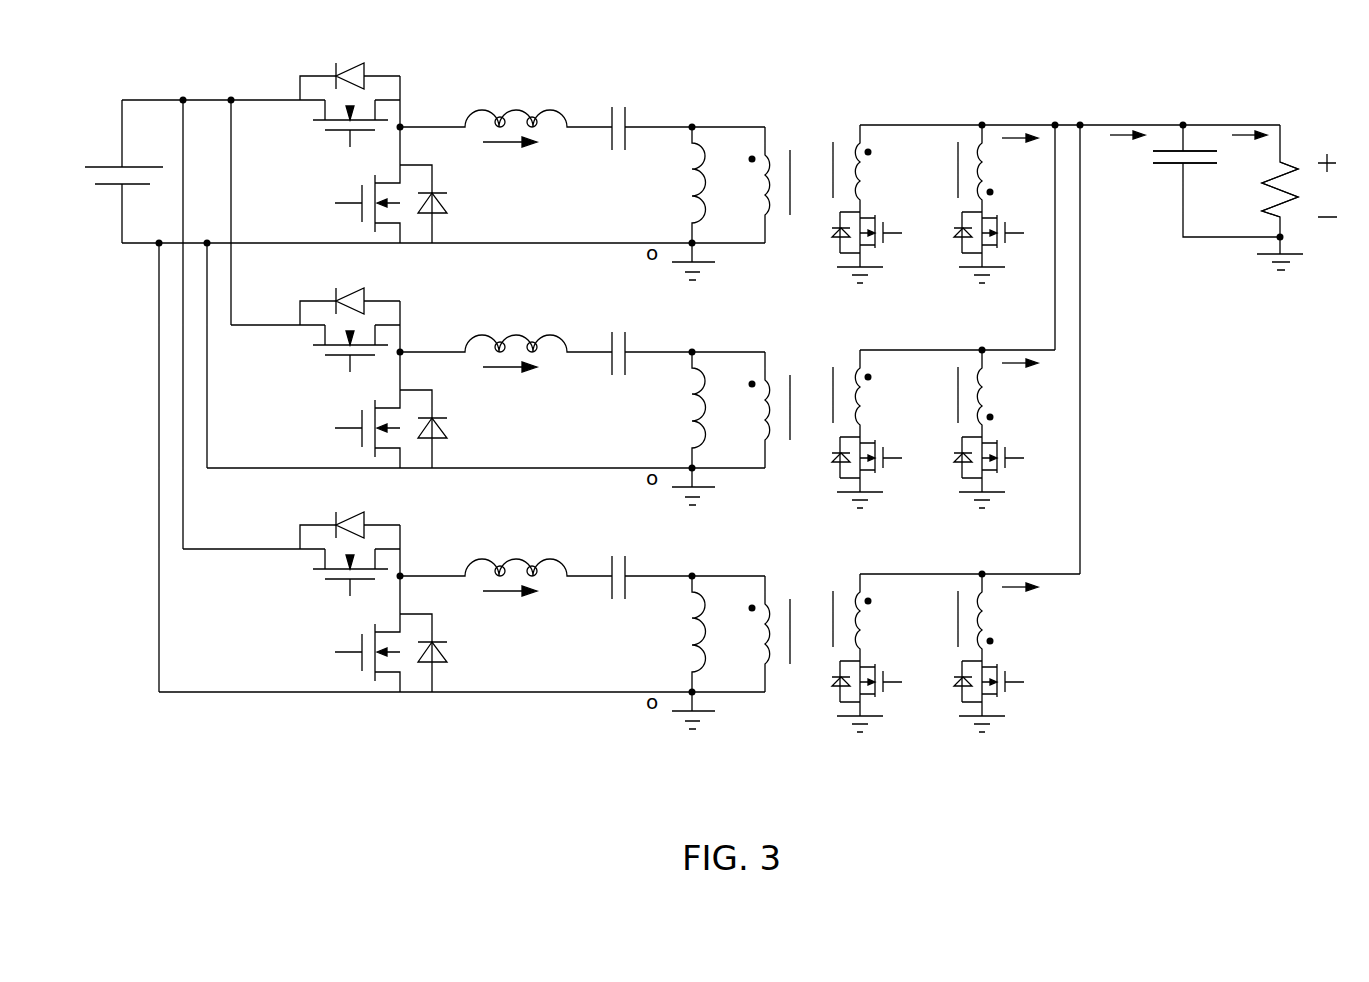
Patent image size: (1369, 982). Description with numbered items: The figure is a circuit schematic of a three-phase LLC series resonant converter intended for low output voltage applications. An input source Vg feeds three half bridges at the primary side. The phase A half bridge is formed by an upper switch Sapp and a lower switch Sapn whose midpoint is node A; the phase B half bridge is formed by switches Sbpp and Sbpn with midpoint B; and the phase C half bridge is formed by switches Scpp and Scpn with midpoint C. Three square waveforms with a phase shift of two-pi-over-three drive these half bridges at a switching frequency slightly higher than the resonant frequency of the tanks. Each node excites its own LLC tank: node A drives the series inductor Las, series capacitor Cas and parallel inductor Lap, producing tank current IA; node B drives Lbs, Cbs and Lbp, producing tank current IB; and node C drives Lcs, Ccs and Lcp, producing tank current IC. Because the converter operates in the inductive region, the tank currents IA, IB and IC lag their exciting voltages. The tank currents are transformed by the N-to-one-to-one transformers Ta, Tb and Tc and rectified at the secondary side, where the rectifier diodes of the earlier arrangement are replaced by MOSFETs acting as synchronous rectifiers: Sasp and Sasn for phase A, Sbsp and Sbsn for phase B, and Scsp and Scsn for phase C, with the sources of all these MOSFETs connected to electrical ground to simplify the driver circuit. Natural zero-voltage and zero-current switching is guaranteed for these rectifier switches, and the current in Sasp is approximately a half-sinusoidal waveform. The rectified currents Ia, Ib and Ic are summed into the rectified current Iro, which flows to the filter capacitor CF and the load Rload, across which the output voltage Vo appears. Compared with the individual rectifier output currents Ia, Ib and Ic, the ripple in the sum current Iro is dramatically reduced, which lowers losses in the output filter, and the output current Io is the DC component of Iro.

The input voltage source Vg is at (121, 171).
The phase A primary upper switch Sapp is at (336, 112).
The phase A primary lower switch Sapn is at (368, 185).
The phase A switching node A is at (412, 140).
The phase A series resonant inductor Las is at (506, 101).
The phase A series resonant capacitor Cas is at (685, 112).
The phase A parallel inductor Lap is at (671, 185).
The phase A resonant tank current IA is at (510, 160).
The phase A transformer Ta is at (871, 162).
The phase A positive rectifier switch Sasp is at (883, 235).
The phase A negative rectifier switch Sasn is at (1005, 235).
The phase A rectified current Ia is at (1020, 156).
The phase B primary upper switch Sbpp is at (336, 337).
The phase B primary lower switch Sbpn is at (368, 410).
The phase B switching node B is at (411, 365).
The phase B series resonant inductor Lbs is at (506, 326).
The phase B series resonant capacitor Cbs is at (685, 337).
The phase B parallel inductor Lbp is at (671, 410).
The phase B resonant tank current IB is at (510, 385).
The phase B transformer Tb is at (871, 387).
The phase B positive rectifier switch Sbsp is at (884, 460).
The phase B negative rectifier switch Sbsn is at (1006, 460).
The phase B rectified current Ib is at (1020, 381).
The phase C primary upper switch Scpp is at (336, 561).
The phase C primary lower switch Scpn is at (368, 634).
The phase C switching node C is at (412, 589).
The phase C series resonant inductor Lcs is at (506, 550).
The phase C series resonant capacitor Ccs is at (685, 561).
The phase C parallel inductor Lcp is at (671, 634).
The phase C resonant tank current IC is at (510, 609).
The phase C transformer Tc is at (871, 611).
The phase C positive rectifier switch Scsp is at (883, 684).
The phase C negative rectifier switch Scsn is at (1005, 684).
The phase C rectified current Ic is at (1020, 605).
The sum rectified current Iro is at (1127, 153).
The output current Io is at (1249, 153).
The filter capacitor CF is at (1177, 184).
The load Rload is at (1248, 200).
The output voltage Vo is at (1329, 185).